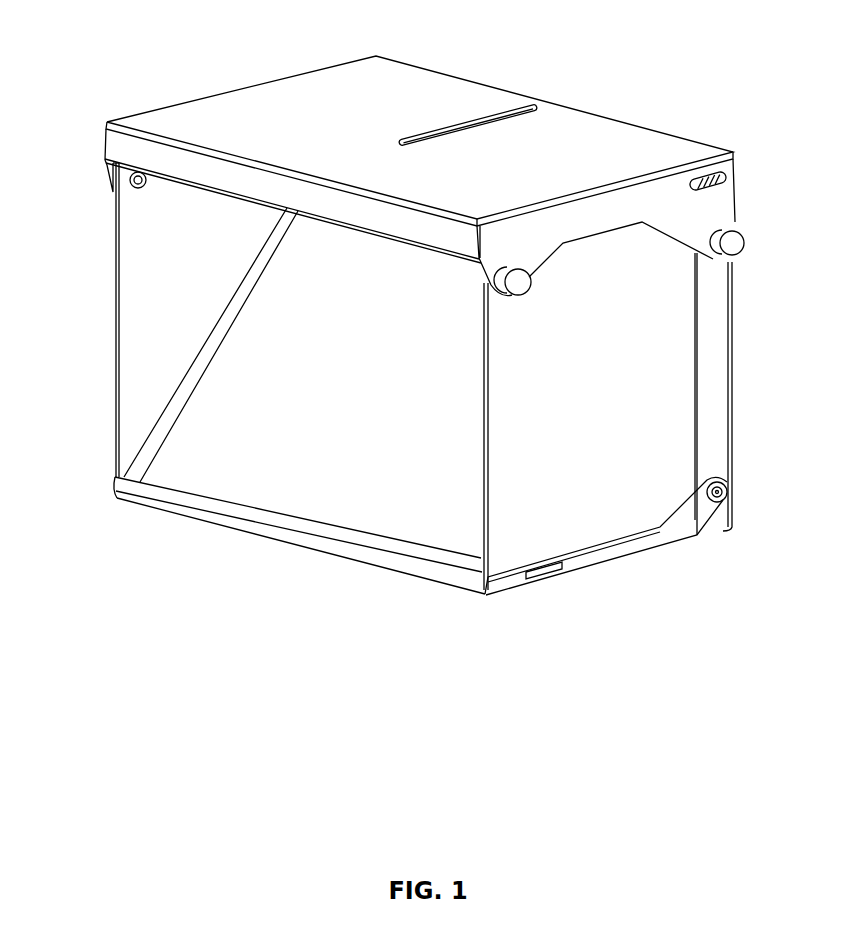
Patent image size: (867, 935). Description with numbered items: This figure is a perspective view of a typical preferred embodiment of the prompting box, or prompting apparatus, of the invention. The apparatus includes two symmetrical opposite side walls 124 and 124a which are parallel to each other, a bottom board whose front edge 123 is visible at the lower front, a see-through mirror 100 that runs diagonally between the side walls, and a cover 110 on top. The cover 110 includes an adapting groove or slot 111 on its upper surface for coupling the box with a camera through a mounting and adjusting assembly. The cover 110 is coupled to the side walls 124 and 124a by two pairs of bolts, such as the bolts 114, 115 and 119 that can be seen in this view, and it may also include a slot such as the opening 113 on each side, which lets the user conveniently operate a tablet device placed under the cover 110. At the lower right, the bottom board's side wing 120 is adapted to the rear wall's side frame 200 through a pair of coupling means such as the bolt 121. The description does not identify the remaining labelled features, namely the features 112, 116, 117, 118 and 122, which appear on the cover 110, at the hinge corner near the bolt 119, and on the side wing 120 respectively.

The see-through mirror 100 is at (228, 453).
The cover 110 is at (627, 150).
The adapting groove or slot 111 is at (505, 113).
The lid side wall 112 is at (728, 207).
The opening 113 is at (715, 180).
The bolt 114 is at (733, 247).
The bolt 115 is at (517, 285).
The lid front skirt 116 is at (408, 223).
The hinge rivet 117 is at (135, 185).
The hinge bracket 118 is at (108, 165).
The bolt 119 is at (112, 180).
The side wing 120 is at (607, 552).
The bolt 121 is at (723, 492).
The base notch 122 is at (538, 580).
The front edge 123 is at (380, 557).
The side wall 124 is at (680, 385).
The side wall 124a is at (138, 268).
The rear wall's side frame 200 is at (713, 325).